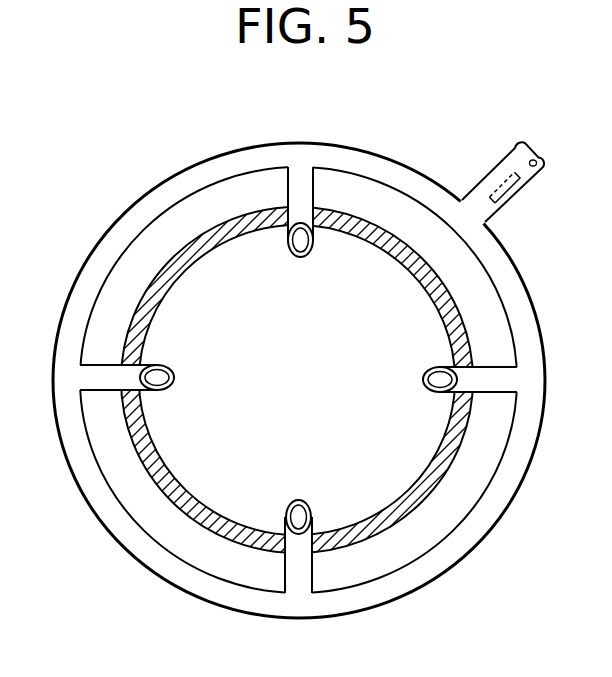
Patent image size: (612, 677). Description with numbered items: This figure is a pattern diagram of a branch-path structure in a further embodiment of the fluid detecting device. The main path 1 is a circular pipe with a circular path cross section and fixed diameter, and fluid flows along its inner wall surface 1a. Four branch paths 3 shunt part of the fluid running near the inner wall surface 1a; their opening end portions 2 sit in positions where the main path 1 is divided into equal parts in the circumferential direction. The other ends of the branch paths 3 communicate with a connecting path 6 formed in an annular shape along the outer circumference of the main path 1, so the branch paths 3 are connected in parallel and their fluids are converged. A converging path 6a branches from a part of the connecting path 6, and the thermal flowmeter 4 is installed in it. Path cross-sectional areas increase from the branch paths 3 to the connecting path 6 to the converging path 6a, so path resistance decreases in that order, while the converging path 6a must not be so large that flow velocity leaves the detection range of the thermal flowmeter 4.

The main path 1 is at (455, 446).
The inner wall surface 1a is at (390, 505).
The opening end portions 2 is at (297, 192).
The branch path 3 is at (295, 244).
The thermal flowmeter 4 is at (517, 198).
The connecting path 6 is at (125, 220).
The converging path 6a is at (498, 175).